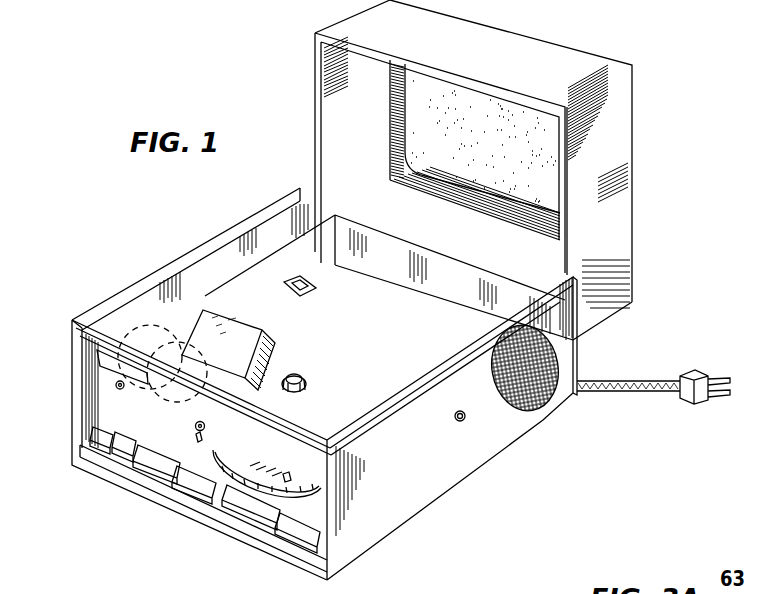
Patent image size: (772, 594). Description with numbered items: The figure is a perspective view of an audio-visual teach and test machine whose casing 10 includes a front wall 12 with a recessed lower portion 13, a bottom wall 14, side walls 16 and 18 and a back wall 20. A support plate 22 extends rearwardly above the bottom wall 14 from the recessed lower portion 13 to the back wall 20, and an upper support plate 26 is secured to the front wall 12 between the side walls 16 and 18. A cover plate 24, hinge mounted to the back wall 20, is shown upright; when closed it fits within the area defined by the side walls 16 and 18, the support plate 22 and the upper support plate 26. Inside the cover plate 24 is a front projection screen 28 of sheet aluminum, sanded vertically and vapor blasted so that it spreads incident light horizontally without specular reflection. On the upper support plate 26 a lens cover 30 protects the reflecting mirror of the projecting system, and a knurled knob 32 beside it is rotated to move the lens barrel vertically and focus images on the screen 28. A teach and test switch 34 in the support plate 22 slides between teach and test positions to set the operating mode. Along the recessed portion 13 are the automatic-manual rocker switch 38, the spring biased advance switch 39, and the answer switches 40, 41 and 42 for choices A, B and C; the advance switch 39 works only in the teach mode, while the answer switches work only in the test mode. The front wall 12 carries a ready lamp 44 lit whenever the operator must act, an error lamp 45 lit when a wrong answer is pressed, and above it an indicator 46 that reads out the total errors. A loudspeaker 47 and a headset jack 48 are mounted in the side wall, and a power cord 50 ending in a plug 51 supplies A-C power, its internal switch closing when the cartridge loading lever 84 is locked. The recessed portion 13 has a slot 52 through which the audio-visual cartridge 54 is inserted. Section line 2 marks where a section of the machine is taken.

The section line 2 is at (193, 437).
The casing 10 is at (426, 527).
The front wall 12 is at (297, 442).
The recessed lower portion 13 is at (108, 405).
The bottom wall 14 is at (118, 470).
The side wall 16 is at (213, 247).
The side wall 18 is at (447, 477).
The back wall 20 is at (577, 358).
The support plate 22 is at (390, 323).
The cover plate 24 is at (622, 172).
The upper support plate 26 is at (145, 313).
The front projection screen 28 is at (527, 113).
The lens cover 30 is at (267, 357).
The knurled knob 32 is at (303, 378).
The teach and test switch 34 is at (300, 288).
The automatic-manual operation switch 38 is at (96, 452).
The advance switch 39 is at (150, 468).
The answer switch A 40 is at (190, 490).
The answer switch B 41 is at (248, 513).
The answer switch C 42 is at (285, 533).
The ready lamp 44 is at (205, 427).
The error lamp 45 is at (116, 385).
The indicator 46 is at (100, 352).
The loudspeaker 47 is at (510, 370).
The jack 48 is at (455, 417).
The power cord 50 is at (630, 395).
The plug 51 is at (692, 377).
The slot 52 is at (182, 446).
The audio-visual cartridge 54 is at (247, 483).
The cartridge loading lever 84 is at (287, 480).